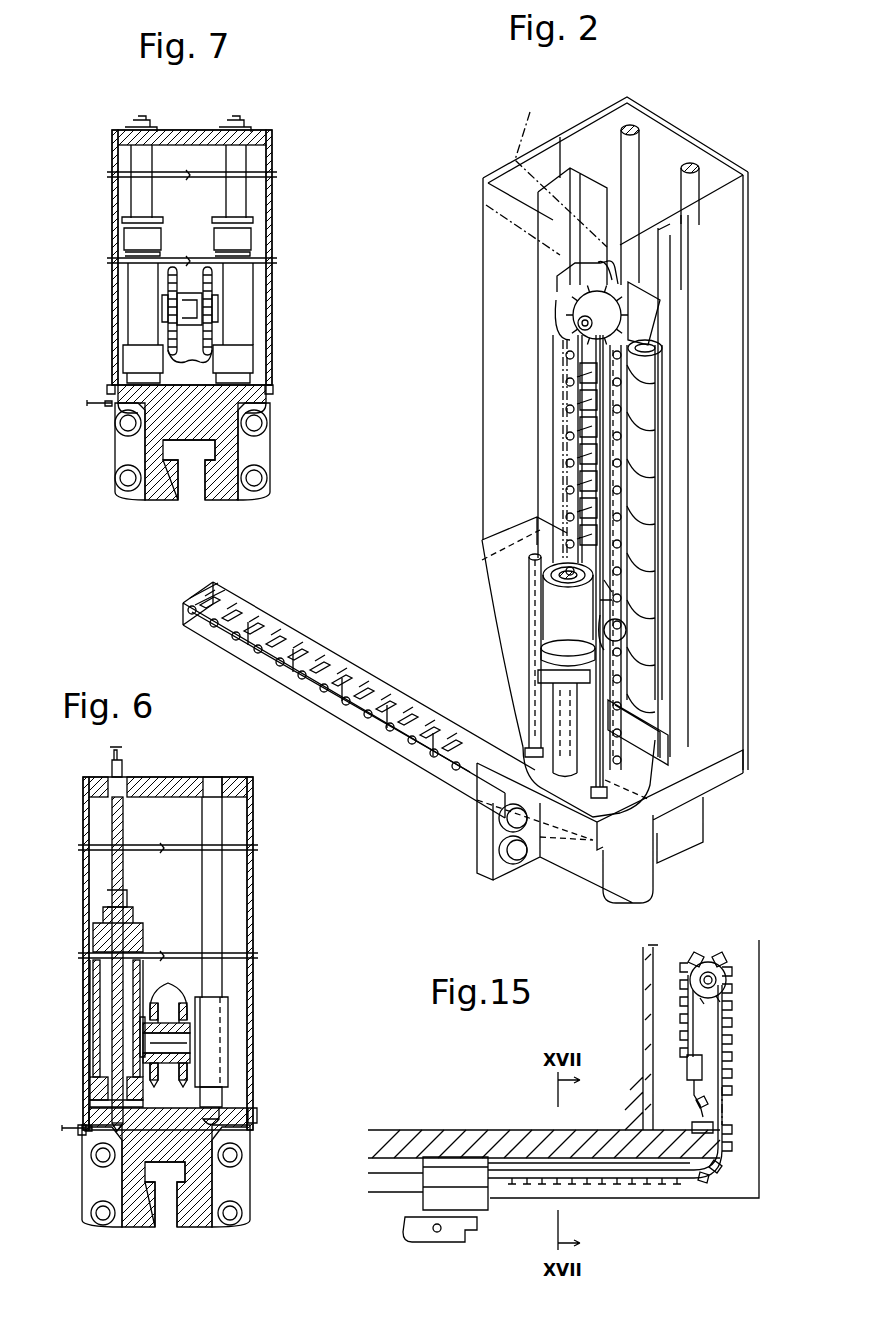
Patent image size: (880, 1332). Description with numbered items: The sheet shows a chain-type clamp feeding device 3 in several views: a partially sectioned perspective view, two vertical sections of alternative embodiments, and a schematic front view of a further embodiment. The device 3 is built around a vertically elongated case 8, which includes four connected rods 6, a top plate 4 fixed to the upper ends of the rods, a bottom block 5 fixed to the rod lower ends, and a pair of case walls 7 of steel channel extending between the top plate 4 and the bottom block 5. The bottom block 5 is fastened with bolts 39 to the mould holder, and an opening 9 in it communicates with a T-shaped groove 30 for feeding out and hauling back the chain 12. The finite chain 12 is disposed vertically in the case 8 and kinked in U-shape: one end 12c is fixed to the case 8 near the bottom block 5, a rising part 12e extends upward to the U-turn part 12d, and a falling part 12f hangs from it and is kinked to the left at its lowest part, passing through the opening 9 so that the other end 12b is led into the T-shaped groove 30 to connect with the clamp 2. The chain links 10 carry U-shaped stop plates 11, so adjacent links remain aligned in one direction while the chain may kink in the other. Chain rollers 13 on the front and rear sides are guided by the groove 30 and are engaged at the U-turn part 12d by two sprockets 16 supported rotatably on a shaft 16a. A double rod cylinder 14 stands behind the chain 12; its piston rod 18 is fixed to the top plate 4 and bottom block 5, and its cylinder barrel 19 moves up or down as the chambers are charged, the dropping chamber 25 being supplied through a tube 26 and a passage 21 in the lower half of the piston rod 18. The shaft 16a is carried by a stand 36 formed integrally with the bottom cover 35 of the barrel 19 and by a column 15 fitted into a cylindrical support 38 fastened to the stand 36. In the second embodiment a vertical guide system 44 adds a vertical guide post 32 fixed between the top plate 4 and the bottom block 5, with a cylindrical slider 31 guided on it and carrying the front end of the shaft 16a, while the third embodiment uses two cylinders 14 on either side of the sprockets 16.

In FIG. 15, the clamp 2 is at (457, 1178).
In FIG. 7, the lifting device assembly 3 is at (272, 95).
In FIG. 6, the lifting device assembly 3 is at (256, 760).
In FIG. 2, the lifting device assembly 3 is at (682, 78).
In FIG. 15, the lifting device assembly 3 is at (724, 936).
In FIG. 7, the top plate 4 is at (190, 131).
In FIG. 6, the top plate 4 is at (178, 780).
In FIG. 7, the bottom block 5 is at (258, 400).
In FIG. 6, the bottom block 5 is at (242, 1130).
In FIG. 2, the bottom block 5 is at (712, 778).
In FIG. 2, the rods 6 is at (689, 166).
In FIG. 7, the case walls 7 is at (268, 222).
In FIG. 6, the case walls 7 is at (250, 1050).
In FIG. 2, the case walls 7 is at (572, 128).
In FIG. 7, the case 8 is at (269, 150).
In FIG. 6, the case 8 is at (257, 801).
In FIG. 2, the case 8 is at (497, 155).
In FIG. 7, the opening 9 is at (200, 463).
In FIG. 6, the opening 9 is at (172, 1194).
In FIG. 2, the chain links 10 is at (660, 345).
In FIG. 2, the stop plate 11 is at (655, 380).
In FIG. 2, the chain 12 is at (395, 756).
In FIG. 15, the another end of chain 12b is at (522, 1162).
In FIG. 15, the one end of chain 12c is at (687, 1042).
In FIG. 2, the U-turn part 12d is at (588, 263).
In FIG. 15, the U-turn part 12d is at (690, 952).
In FIG. 2, the rising part 12e is at (556, 496).
In FIG. 15, the rising part 12e is at (683, 1020).
In FIG. 2, the falling part 12f is at (653, 436).
In FIG. 15, the falling part 12f is at (733, 1035).
In FIG. 2, the chain rollers 13 is at (570, 440).
In FIG. 7, the double rod cylinder 14 is at (139, 312).
In FIG. 6, the double rod cylinder 14 is at (90, 1010).
In FIG. 2, the double rod cylinder 14 is at (550, 613).
In FIG. 7, the column 15 is at (220, 332).
In FIG. 6, the column 15 is at (145, 1080).
In FIG. 2, the column 15 is at (625, 590).
In FIG. 7, the sprockets 16 is at (182, 345).
In FIG. 6, the sprockets 16 is at (171, 993).
In FIG. 2, the sprockets 16 is at (575, 308).
In FIG. 15, the sprockets 16 is at (714, 968).
In FIG. 6, the shaft 16a is at (174, 1050).
In FIG. 2, the shaft 16a is at (565, 333).
In FIG. 7, the piston rod 18 is at (136, 204).
In FIG. 6, the piston rod 18 is at (90, 890).
In FIG. 2, the piston rod 18 is at (563, 760).
In FIG. 7, the cylinder barrel 19 is at (135, 280).
In FIG. 6, the cylinder barrel 19 is at (93, 972).
In FIG. 2, the cylinder barrel 19 is at (540, 572).
In FIG. 2, the passage 21 is at (543, 590).
In FIG. 2, the dropping chamber 25 is at (545, 548).
In FIG. 7, the tube 26 is at (104, 409).
In FIG. 6, the tube 26 is at (84, 1138).
In FIG. 15, the T-shaped groove 30 is at (388, 1168).
In FIG. 6, the cylindrical slider 31 is at (226, 1020).
In FIG. 6, the vertical guide post 32 is at (215, 990).
In FIG. 2, the bottom cover 35 is at (550, 667).
In FIG. 2, the stand 36 is at (594, 640).
In FIG. 2, the cylindrical support 38 is at (640, 633).
In FIG. 2, the bolts 39 is at (520, 858).
In FIG. 6, the vertical guide system 44 is at (292, 975).